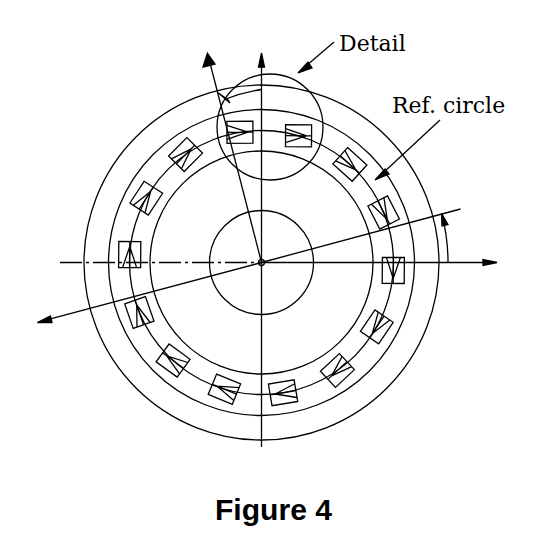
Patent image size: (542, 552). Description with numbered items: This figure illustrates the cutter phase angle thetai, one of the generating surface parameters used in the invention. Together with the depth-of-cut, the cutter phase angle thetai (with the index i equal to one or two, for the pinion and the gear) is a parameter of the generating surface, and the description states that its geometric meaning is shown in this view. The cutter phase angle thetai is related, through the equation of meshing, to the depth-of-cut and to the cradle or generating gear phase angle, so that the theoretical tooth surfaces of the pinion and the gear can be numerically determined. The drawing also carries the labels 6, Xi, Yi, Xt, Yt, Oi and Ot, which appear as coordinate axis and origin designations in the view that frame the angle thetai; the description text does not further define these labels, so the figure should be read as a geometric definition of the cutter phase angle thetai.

The outer ring 6 is at (261, 262).
The inner ring X axis Xi is at (278, 282).
The inner ring Y axis Yi is at (250, 230).
The tilted X axis Xt is at (217, 142).
The tilted Y axis Yt is at (244, 285).
The inner ring center Oi is at (245, 248).
The tilted frame center Ot is at (262, 263).
The cutter phase angle thetai is at (349, 158).